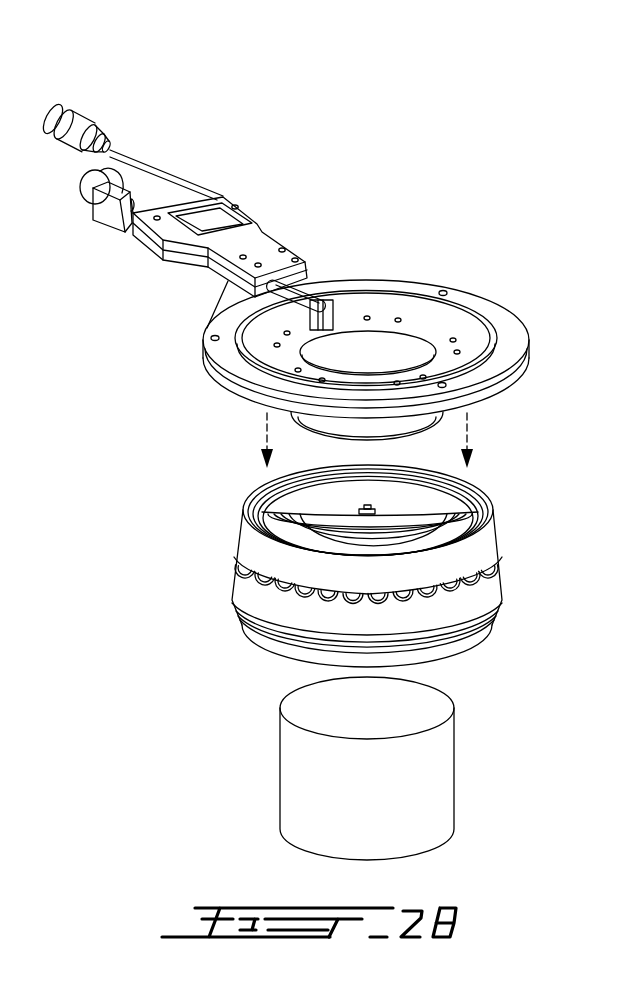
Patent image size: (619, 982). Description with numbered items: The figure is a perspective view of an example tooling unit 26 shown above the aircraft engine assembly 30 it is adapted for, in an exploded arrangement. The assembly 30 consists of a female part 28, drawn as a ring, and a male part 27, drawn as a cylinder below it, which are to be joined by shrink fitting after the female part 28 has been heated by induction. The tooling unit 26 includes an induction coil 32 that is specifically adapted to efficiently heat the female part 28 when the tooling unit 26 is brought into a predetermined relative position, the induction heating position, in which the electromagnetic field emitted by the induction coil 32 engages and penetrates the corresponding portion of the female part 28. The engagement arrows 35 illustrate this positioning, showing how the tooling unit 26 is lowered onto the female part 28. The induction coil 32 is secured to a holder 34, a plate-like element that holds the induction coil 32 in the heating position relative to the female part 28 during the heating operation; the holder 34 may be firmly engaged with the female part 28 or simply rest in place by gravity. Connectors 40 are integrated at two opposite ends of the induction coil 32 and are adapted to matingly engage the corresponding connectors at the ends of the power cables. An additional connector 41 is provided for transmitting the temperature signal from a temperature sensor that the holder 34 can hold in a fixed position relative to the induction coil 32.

The tooling unit 26 is at (389, 235).
The male part 27 is at (318, 767).
The female part 28 is at (268, 552).
The aircraft engine assembly 30 is at (380, 661).
The induction coil 32 is at (300, 297).
The holder 34 is at (445, 323).
The engagement arrows 35 is at (263, 428).
The connectors 40 is at (107, 176).
The additional connector 41 is at (103, 213).